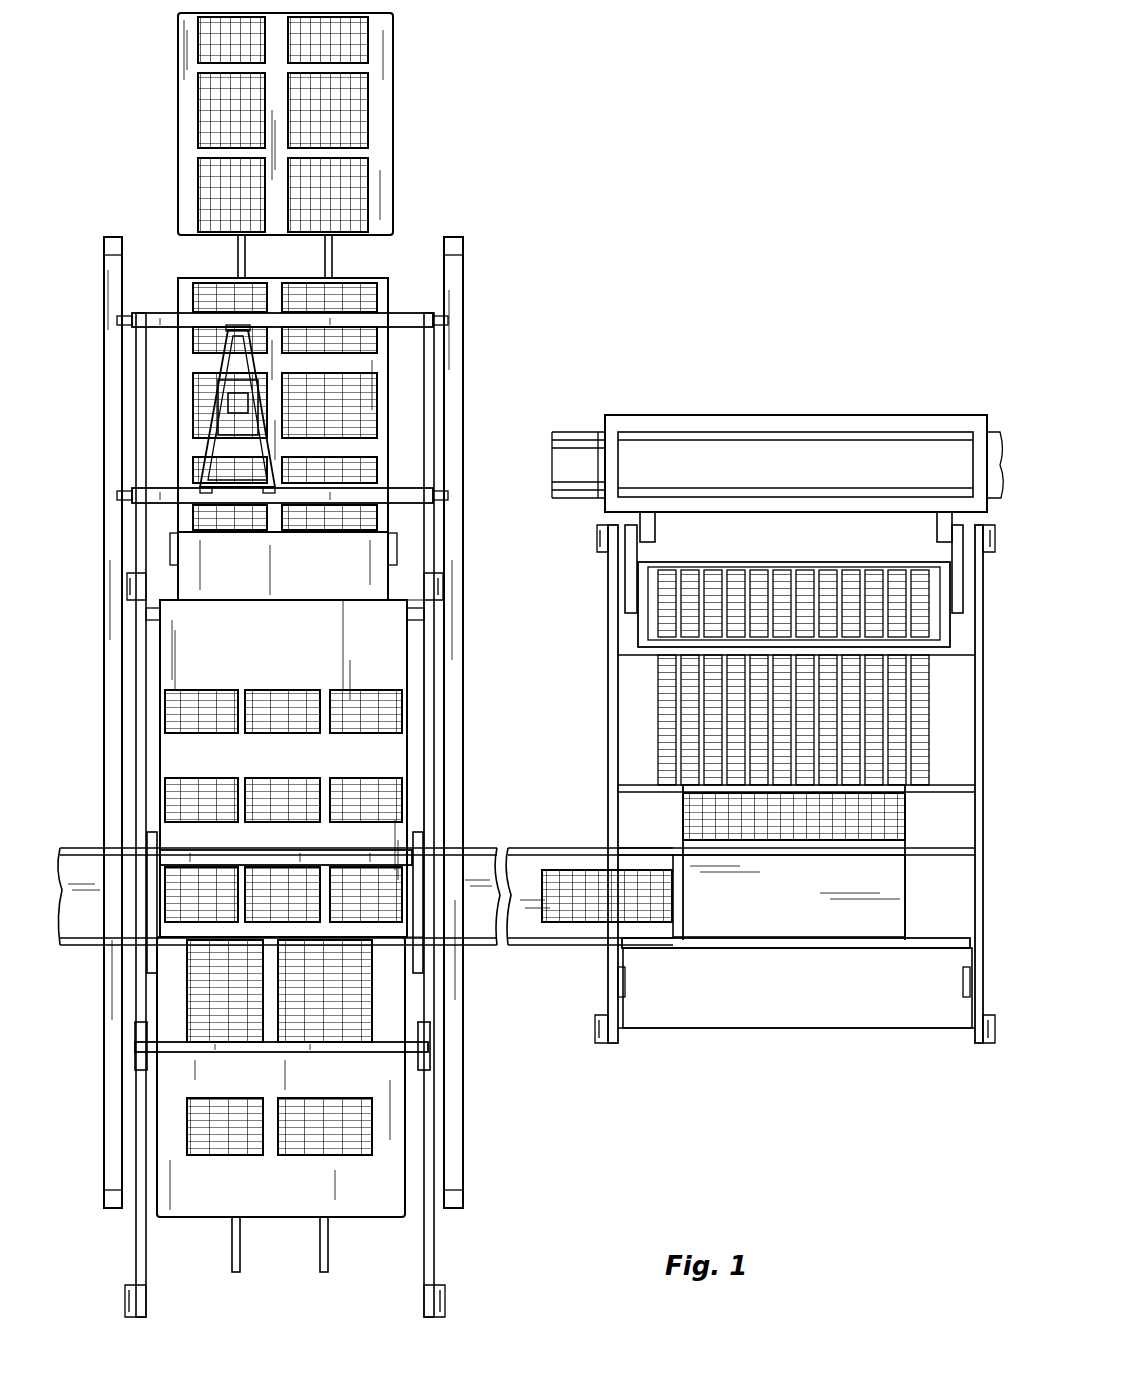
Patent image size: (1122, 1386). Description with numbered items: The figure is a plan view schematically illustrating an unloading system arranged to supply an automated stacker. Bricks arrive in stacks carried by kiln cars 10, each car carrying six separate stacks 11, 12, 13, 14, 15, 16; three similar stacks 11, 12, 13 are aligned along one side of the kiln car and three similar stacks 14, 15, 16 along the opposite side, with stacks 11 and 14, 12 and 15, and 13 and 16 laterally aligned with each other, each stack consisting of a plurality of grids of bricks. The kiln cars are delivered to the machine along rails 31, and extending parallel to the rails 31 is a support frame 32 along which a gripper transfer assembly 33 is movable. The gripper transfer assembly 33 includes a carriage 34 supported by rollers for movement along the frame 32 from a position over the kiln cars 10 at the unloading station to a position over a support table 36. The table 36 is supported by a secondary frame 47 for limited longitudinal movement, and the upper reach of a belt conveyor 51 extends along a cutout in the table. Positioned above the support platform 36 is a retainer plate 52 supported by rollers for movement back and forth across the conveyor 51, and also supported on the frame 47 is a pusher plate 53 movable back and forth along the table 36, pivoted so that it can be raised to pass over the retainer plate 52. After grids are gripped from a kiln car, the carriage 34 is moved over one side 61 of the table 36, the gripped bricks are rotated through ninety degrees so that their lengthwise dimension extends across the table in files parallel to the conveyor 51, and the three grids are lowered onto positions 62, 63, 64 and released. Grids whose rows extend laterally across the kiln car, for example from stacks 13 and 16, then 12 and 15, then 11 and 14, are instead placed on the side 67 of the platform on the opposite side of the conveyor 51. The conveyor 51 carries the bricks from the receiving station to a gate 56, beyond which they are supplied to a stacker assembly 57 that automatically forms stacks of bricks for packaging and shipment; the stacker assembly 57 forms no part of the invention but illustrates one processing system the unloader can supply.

The kiln car 10 is at (393, 195).
The stack 11 is at (200, 38).
The stack 12 is at (200, 118).
The stack 13 is at (200, 183).
The stack 14 is at (370, 37).
The stack 15 is at (375, 110).
The stack 16 is at (365, 185).
The rails 31 is at (245, 257).
The support frame 32 is at (455, 365).
The gripper transfer assembly 33 is at (148, 308).
The carriage 34 is at (348, 490).
The support table 36 is at (398, 1100).
The secondary frame 47 is at (425, 665).
The belt conveyor 51 is at (485, 925).
The retainer plate 52 is at (395, 860).
The pusher plate 53 is at (237, 1047).
The gate 56 is at (680, 900).
The stacker assembly 57 is at (607, 702).
The side of support table 61 is at (300, 650).
The grid position 62 is at (197, 786).
The grid position 63 is at (282, 786).
The grid position 64 is at (367, 786).
The side of platform 67 is at (296, 1190).